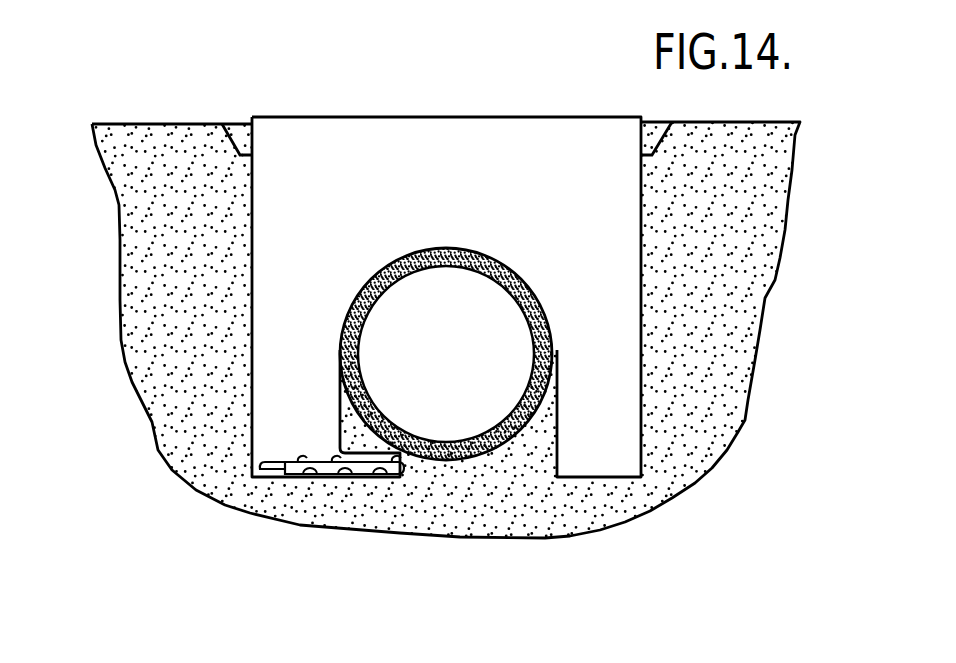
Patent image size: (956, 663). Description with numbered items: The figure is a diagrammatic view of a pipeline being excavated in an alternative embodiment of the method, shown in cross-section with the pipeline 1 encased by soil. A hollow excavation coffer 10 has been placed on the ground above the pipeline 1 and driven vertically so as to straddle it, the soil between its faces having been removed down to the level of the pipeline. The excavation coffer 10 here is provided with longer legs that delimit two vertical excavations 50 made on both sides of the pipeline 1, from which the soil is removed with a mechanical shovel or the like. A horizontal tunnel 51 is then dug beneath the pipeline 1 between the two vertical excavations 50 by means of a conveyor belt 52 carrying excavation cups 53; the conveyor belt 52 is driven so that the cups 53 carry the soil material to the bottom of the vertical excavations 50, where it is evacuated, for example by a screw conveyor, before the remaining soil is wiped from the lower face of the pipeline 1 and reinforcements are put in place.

The excavation coffer 10 is at (393, 162).
The pipe 1 is at (530, 322).
The vertical excavations 50 is at (278, 409).
The horizontal tunnel 51 is at (392, 478).
The conveyor belt 52 is at (360, 478).
The excavation cups 53 is at (335, 478).